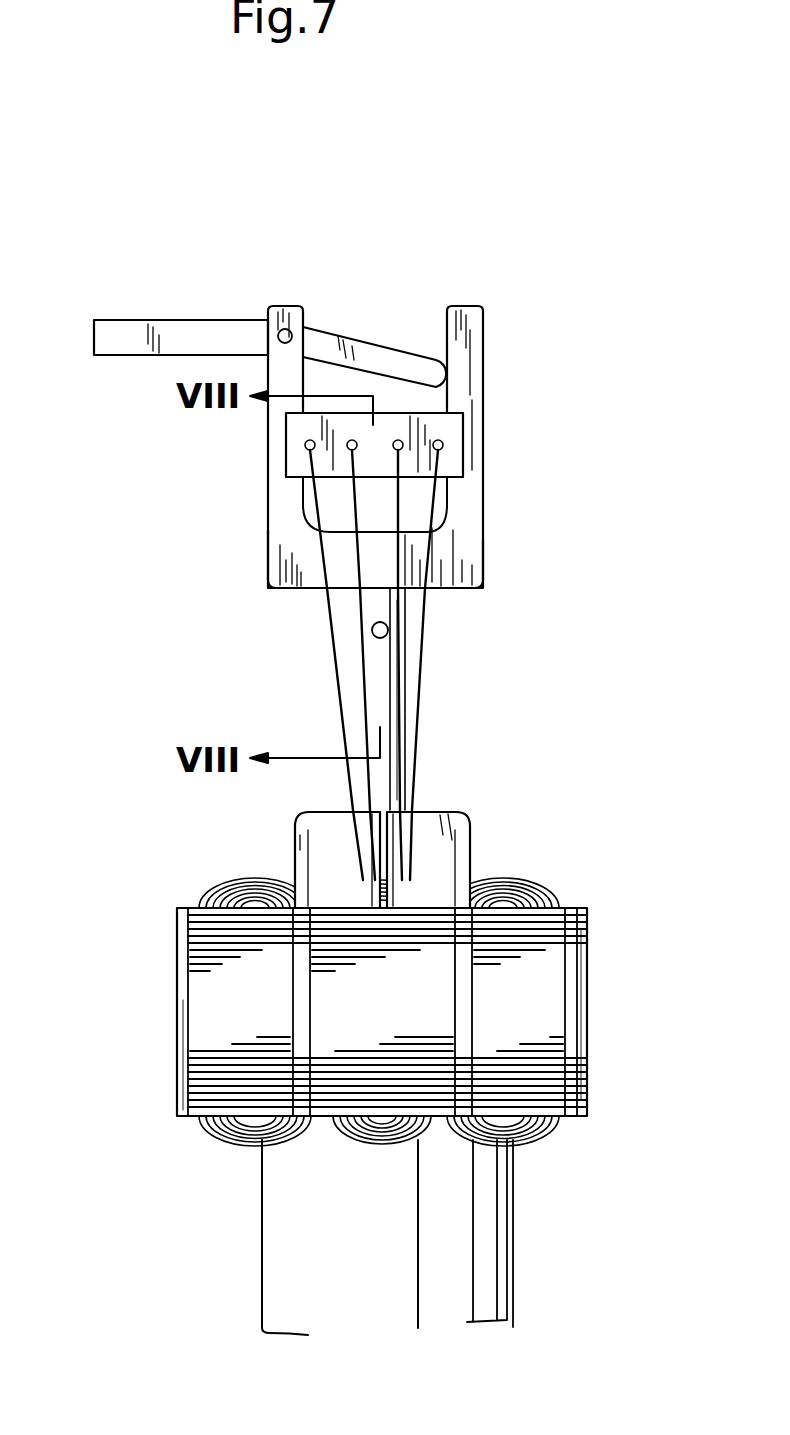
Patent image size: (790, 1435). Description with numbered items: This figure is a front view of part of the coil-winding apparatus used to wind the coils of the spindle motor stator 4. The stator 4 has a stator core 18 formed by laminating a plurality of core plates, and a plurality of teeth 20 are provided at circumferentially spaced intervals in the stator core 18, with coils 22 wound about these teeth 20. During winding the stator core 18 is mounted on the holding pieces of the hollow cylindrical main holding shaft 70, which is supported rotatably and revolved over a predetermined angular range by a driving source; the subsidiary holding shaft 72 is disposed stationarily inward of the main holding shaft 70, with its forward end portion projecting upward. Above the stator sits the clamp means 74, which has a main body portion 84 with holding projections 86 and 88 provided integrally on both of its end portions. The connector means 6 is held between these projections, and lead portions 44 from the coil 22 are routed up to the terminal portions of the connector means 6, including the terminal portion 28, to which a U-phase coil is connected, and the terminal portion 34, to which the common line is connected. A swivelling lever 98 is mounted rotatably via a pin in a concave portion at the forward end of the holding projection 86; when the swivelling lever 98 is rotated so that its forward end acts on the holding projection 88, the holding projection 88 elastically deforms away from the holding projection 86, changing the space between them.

The stator 4 is at (159, 950).
The connector means 6 is at (466, 424).
The stator core 18 is at (591, 916).
The teeth 20 is at (583, 1035).
The coils 22 is at (422, 888).
The terminal portion 28 is at (302, 445).
The terminal portion 34 is at (444, 442).
The lead portions 44 is at (398, 658).
The main holding shaft 70 is at (514, 1217).
The subsidiary holding shaft 72 is at (421, 769).
The clamp means 74 is at (487, 307).
The main body portion 84 is at (467, 560).
The holding projection 86 is at (274, 535).
The holding projection 88 is at (472, 380).
The swivelling lever 98 is at (182, 318).